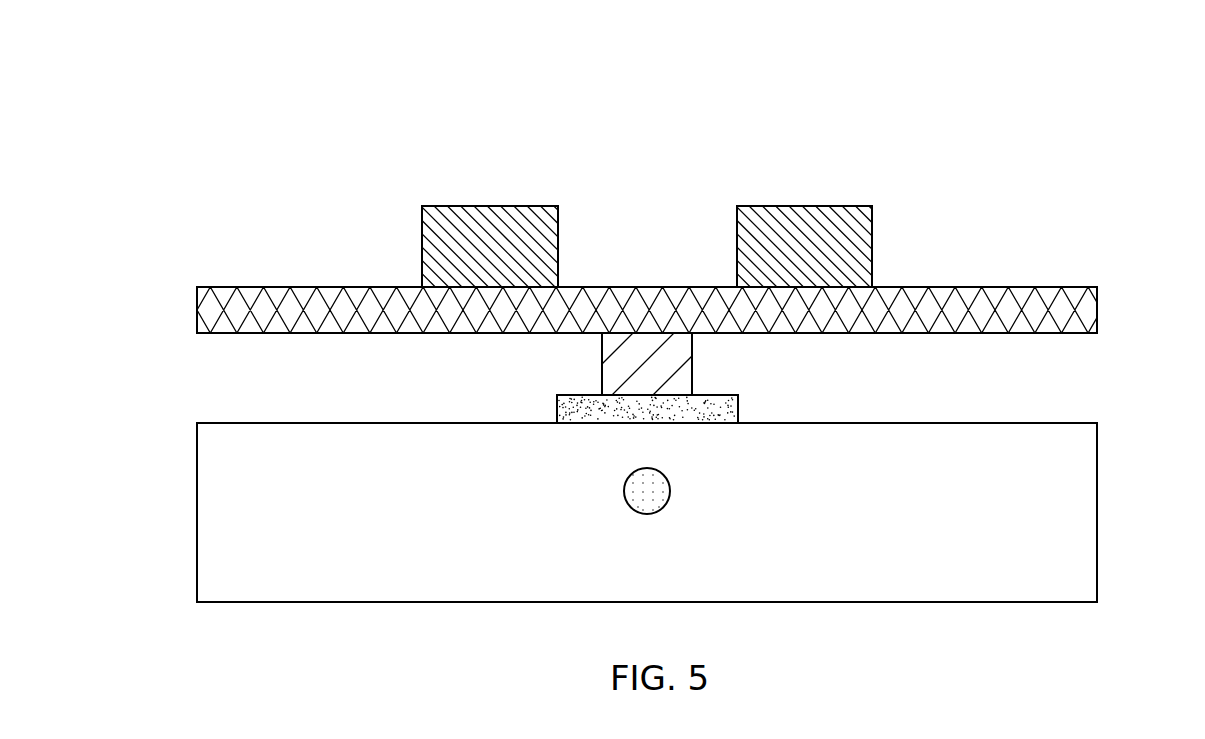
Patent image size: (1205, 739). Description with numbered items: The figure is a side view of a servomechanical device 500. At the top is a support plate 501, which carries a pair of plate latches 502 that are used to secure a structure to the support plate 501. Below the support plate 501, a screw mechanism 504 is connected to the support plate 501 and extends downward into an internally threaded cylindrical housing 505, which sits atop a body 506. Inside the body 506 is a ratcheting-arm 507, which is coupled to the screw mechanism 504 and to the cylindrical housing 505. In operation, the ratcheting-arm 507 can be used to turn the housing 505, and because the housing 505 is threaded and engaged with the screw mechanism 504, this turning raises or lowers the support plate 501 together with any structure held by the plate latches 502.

The servomechanical device 500 is at (252, 115).
The support plate 501 is at (1088, 305).
The plate latches 502 is at (488, 218).
The screw mechanism 504 is at (670, 363).
The internally threaded cylindrical housing 505 is at (568, 407).
The body 506 is at (1080, 530).
The ratcheting-arm 507 is at (659, 489).